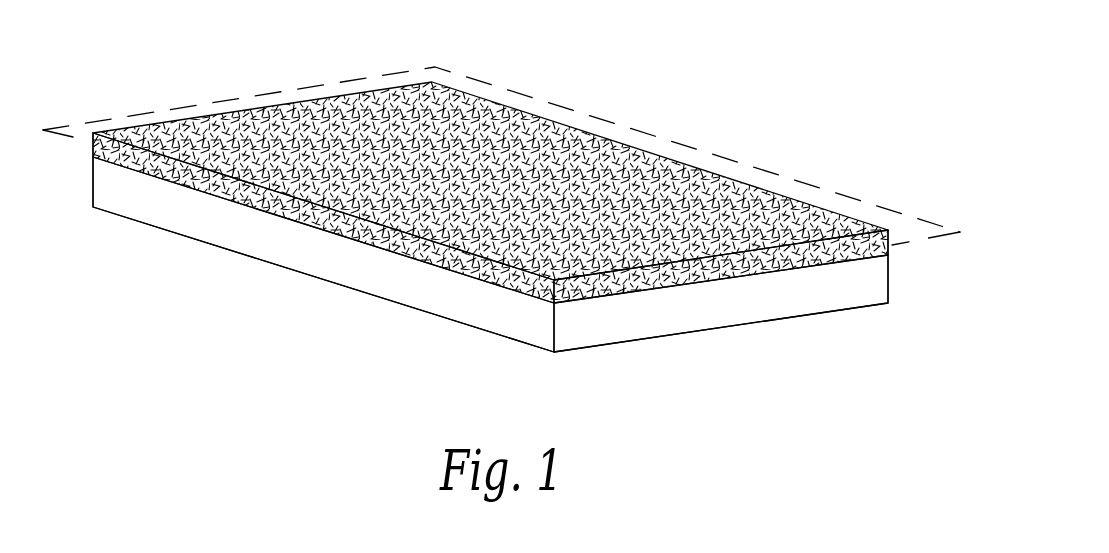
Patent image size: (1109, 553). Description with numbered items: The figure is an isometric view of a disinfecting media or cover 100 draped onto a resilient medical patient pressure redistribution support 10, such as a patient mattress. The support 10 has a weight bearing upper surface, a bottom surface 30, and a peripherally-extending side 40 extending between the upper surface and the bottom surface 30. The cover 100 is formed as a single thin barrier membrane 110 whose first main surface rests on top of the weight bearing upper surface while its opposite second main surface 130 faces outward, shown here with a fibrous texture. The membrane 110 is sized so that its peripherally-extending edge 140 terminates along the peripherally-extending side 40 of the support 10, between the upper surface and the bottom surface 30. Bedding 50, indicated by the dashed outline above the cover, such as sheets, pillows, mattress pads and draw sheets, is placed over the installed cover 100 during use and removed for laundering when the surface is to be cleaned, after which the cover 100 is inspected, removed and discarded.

The resilient medical patient pressure redistribution support 10 is at (227, 262).
The bottom surface 30 is at (465, 325).
The peripherally-extending side 40 is at (715, 300).
The bedding 50 is at (167, 105).
The disinfecting media or cover 100 is at (530, 110).
The single thin barrier membrane 110 is at (695, 210).
The second main surface 130 is at (600, 167).
The peripherally-extending edge 140 is at (372, 243).